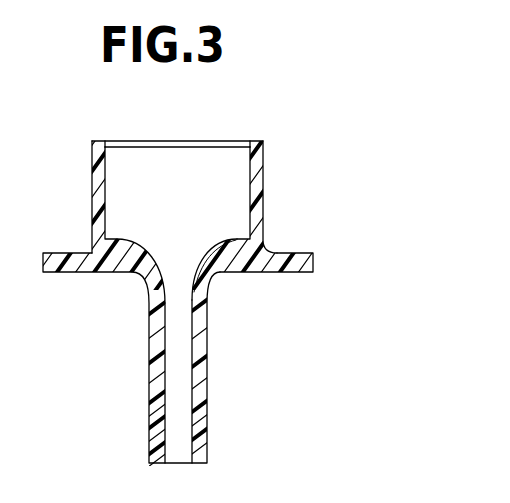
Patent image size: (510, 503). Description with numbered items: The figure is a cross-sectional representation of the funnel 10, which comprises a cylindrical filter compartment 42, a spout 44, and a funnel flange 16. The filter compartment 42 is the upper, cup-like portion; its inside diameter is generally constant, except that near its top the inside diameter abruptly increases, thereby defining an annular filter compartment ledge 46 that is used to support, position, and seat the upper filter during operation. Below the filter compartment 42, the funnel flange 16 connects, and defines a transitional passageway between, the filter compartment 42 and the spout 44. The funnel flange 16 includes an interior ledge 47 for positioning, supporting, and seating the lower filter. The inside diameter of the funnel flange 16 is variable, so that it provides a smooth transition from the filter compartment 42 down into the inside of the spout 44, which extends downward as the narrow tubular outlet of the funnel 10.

The funnel 10 is at (284, 209).
The funnel flange 16 is at (320, 260).
The filter compartment 42 is at (222, 190).
The spout 44 is at (210, 366).
The filter compartment ledge 46 is at (135, 142).
The interior ledge 47 is at (152, 238).